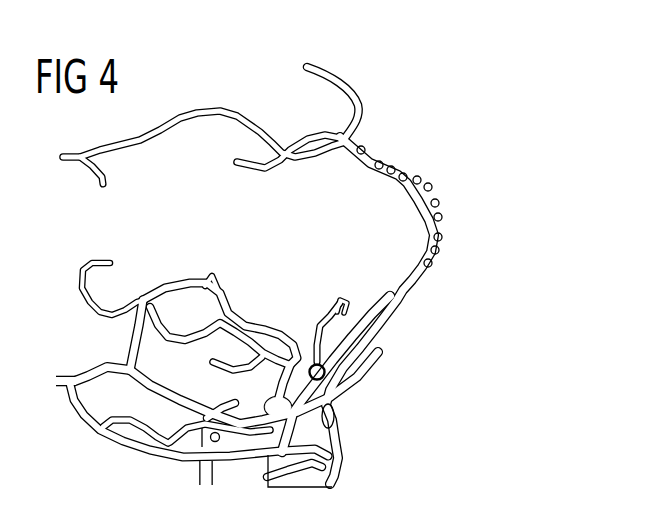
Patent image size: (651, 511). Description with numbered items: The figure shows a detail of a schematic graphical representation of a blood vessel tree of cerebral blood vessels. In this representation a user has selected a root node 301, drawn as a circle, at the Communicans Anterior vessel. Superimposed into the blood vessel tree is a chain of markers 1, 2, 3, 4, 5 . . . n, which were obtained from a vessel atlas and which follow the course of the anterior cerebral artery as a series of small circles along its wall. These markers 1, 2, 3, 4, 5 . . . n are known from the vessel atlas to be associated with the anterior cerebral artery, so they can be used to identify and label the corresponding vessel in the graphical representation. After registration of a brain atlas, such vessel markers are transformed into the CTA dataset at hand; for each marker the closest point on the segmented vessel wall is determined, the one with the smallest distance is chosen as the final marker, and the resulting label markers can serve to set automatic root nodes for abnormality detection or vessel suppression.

The marker 1 is at (366, 146).
The marker 2 is at (376, 168).
The marker 3 is at (395, 166).
The marker 4 is at (400, 181).
The marker 5 is at (422, 179).
The marker n is at (428, 266).
The root node 301 is at (307, 341).